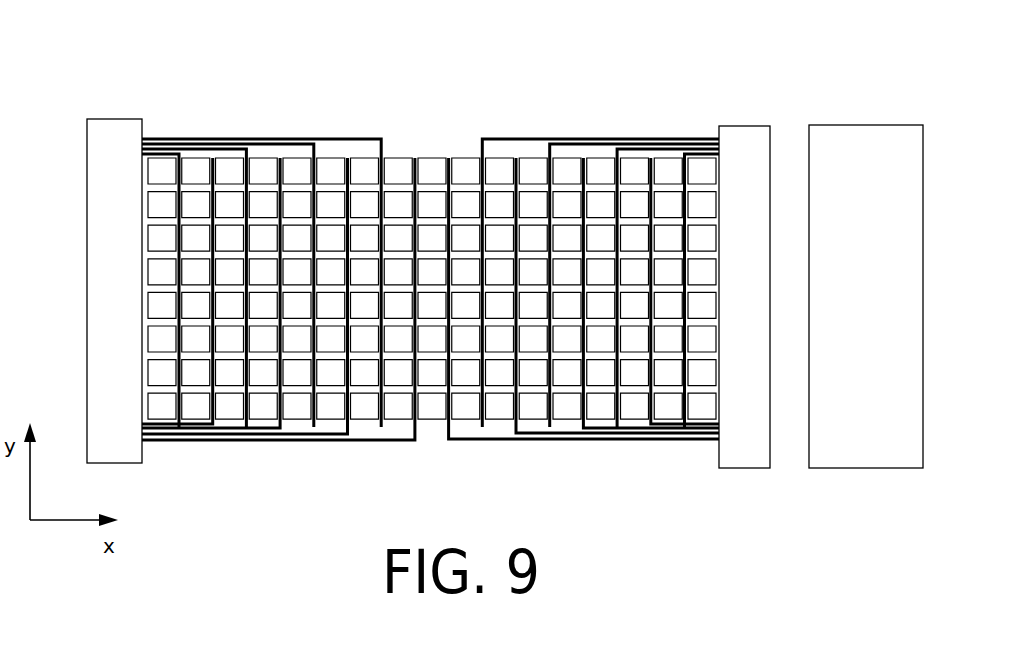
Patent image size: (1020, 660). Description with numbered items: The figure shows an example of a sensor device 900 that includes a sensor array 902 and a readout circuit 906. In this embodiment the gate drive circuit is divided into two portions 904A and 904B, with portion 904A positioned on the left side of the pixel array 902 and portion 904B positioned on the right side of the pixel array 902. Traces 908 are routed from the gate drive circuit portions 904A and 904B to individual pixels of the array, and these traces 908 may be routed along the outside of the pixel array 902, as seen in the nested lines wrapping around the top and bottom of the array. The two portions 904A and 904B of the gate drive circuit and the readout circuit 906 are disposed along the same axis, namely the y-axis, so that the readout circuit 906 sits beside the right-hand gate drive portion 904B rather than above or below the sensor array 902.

The sensor device 900 is at (146, 84).
The sensor array 902 is at (455, 128).
The gate drive circuit portion 904A is at (88, 231).
The gate drive circuit portion 904B is at (756, 124).
The readout circuit 906 is at (848, 322).
The traces 908 is at (291, 139).